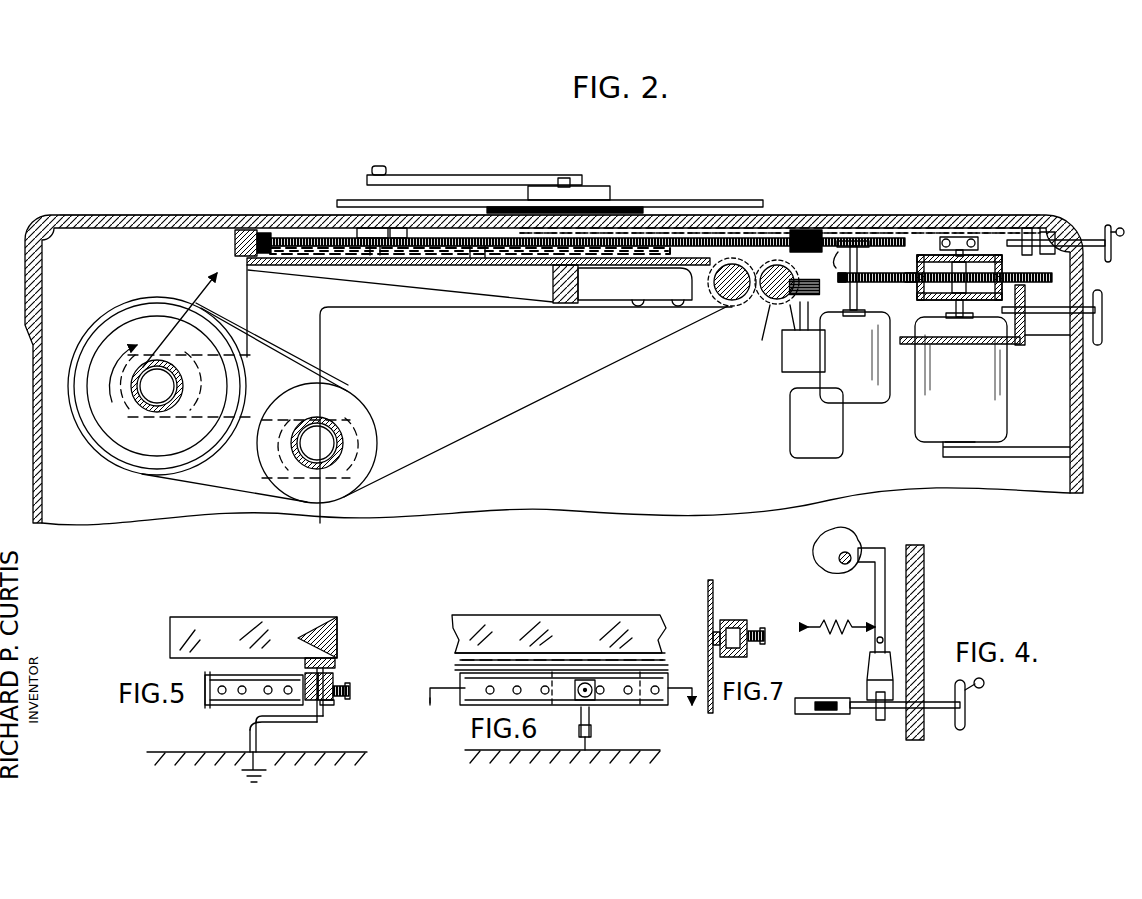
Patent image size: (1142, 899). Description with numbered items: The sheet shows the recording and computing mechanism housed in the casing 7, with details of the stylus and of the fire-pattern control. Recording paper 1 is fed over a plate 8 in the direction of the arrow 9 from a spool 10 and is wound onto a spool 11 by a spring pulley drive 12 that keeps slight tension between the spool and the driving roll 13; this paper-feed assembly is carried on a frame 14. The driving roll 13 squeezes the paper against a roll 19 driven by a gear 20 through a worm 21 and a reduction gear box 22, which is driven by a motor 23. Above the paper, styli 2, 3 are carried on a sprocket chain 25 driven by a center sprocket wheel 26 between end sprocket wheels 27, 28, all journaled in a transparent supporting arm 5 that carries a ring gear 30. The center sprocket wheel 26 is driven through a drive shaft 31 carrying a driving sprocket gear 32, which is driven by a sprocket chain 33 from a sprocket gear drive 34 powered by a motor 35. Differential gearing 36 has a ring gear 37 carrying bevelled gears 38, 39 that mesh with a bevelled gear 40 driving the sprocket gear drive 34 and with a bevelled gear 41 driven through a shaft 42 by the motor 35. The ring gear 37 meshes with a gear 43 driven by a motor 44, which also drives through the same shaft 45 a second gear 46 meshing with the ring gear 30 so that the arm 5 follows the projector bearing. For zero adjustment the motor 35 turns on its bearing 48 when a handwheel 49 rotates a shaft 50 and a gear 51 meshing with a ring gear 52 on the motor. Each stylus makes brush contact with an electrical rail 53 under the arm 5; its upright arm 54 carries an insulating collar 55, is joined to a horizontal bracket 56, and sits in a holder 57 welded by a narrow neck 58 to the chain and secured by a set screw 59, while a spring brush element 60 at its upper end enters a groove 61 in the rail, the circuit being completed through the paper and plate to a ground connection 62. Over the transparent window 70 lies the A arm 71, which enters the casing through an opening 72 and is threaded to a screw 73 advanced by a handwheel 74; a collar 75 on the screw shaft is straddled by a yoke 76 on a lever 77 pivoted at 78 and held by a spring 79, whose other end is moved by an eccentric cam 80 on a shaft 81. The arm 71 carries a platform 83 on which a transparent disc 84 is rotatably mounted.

In FIG. 2, the recording paper 1 is at (655, 352).
In FIG. 5, the recording paper 1 is at (352, 752).
In FIG. 2, the stylus 2 is at (448, 254).
In FIG. 5, the stylus 2 is at (300, 725).
In FIG. 2, the stylus 3 is at (383, 256).
In FIG. 5, the supporting arm 5 is at (293, 617).
In FIG. 6, the casing 7 is at (560, 707).
In FIG. 2, the plate 8 is at (517, 265).
In FIG. 5, the plate 8 is at (357, 758).
In FIG. 2, the arrow 9 is at (212, 275).
In FIG. 2, the spool 10 is at (145, 366).
In FIG. 2, the spool 11 is at (372, 410).
In FIG. 2, the spring pulley drive 12 is at (266, 364).
In FIG. 2, the driving roll 13 is at (731, 308).
In FIG. 2, the frame 14 is at (340, 309).
In FIG. 2, the roll 19 is at (772, 306).
In FIG. 2, the gear 20 is at (797, 274).
In FIG. 2, the worm 21 is at (813, 302).
In FIG. 2, the reduction gear box 22 is at (795, 362).
In FIG. 2, the motor 23 is at (833, 434).
In FIG. 2, the sprocket chain 25 is at (480, 256).
In FIG. 5, the sprocket chain 25 is at (206, 698).
In FIG. 7, the sprocket chain 25 is at (712, 590).
In FIG. 2, the center sprocket wheel 26 is at (530, 256).
In FIG. 5, the center sprocket wheel 26 is at (224, 705).
In FIG. 2, the end sprocket wheel 27 is at (630, 284).
In FIG. 2, the end sprocket wheel 28 is at (270, 252).
In FIG. 2, the ring gear 30 is at (706, 240).
In FIG. 2, the drive shaft 31 is at (568, 207).
In FIG. 2, the driving sprocket gear 32 is at (520, 225).
In FIG. 2, the sprocket chain 33 is at (722, 233).
In FIG. 2, the sprocket gear drive 34 is at (975, 233).
In FIG. 2, the motor 35 is at (1008, 390).
In FIG. 2, the differential gearing 36 is at (1010, 258).
In FIG. 2, the ring gear 37 is at (905, 277).
In FIG. 2, the bevelled gear 38 is at (944, 258).
In FIG. 2, the bevelled gear 39 is at (1004, 262).
In FIG. 2, the bevelled gear 40 is at (983, 268).
In FIG. 2, the bevelled gear 41 is at (1092, 310).
In FIG. 2, the shaft 42 is at (950, 310).
In FIG. 2, the gear 43 is at (866, 265).
In FIG. 2, the motor 44 is at (882, 400).
In FIG. 2, the shaft 45 is at (836, 262).
In FIG. 2, the gear 46 is at (856, 262).
In FIG. 2, the bearing 48 is at (937, 457).
In FIG. 2, the handwheel 49 is at (1098, 336).
In FIG. 2, the shaft 50 is at (1026, 325).
In FIG. 2, the gear 51 is at (1040, 322).
In FIG. 2, the ring gear 52 is at (950, 344).
In FIG. 2, the electrical rail 53 is at (425, 256).
In FIG. 5, the electrical rail 53 is at (320, 676).
In FIG. 5, the upright arm 54 is at (325, 722).
In FIG. 7, the upright arm 54 is at (748, 630).
In FIG. 5, the insulating collar 55 is at (336, 682).
In FIG. 7, the insulating collar 55 is at (755, 644).
In FIG. 5, the horizontal bracket 56 is at (260, 738).
In FIG. 5, the holder 57 is at (336, 705).
In FIG. 5, the narrow neck 58 is at (322, 628).
In FIG. 5, the set screw 59 is at (350, 690).
In FIG. 6, the spring brush element 60 is at (580, 668).
In FIG. 5, the groove 61 is at (330, 662).
In FIG. 5, the ground connection 62 is at (245, 778).
In FIG. 2, the transparent window 70 is at (290, 215).
In FIG. 2, the arm 71 is at (783, 218).
In FIG. 2, the opening 72 is at (1056, 238).
In FIG. 2, the screw 73 is at (1034, 240).
In FIG. 4, the screw 73 is at (940, 712).
In FIG. 2, the handwheel 74 is at (1100, 238).
In FIG. 4, the handwheel 74 is at (962, 710).
In FIG. 4, the collar 75 is at (875, 712).
In FIG. 4, the yoke 76 is at (868, 682).
In FIG. 4, the lever 77 is at (884, 641).
In FIG. 4, the pivot 78 is at (884, 648).
In FIG. 4, the spring 79 is at (834, 626).
In FIG. 4, the cam 80 is at (840, 545).
In FIG. 4, the shaft 81 is at (851, 556).
In FIG. 2, the platform 83 is at (637, 212).
In FIG. 2, the transparent disc 84 is at (353, 200).